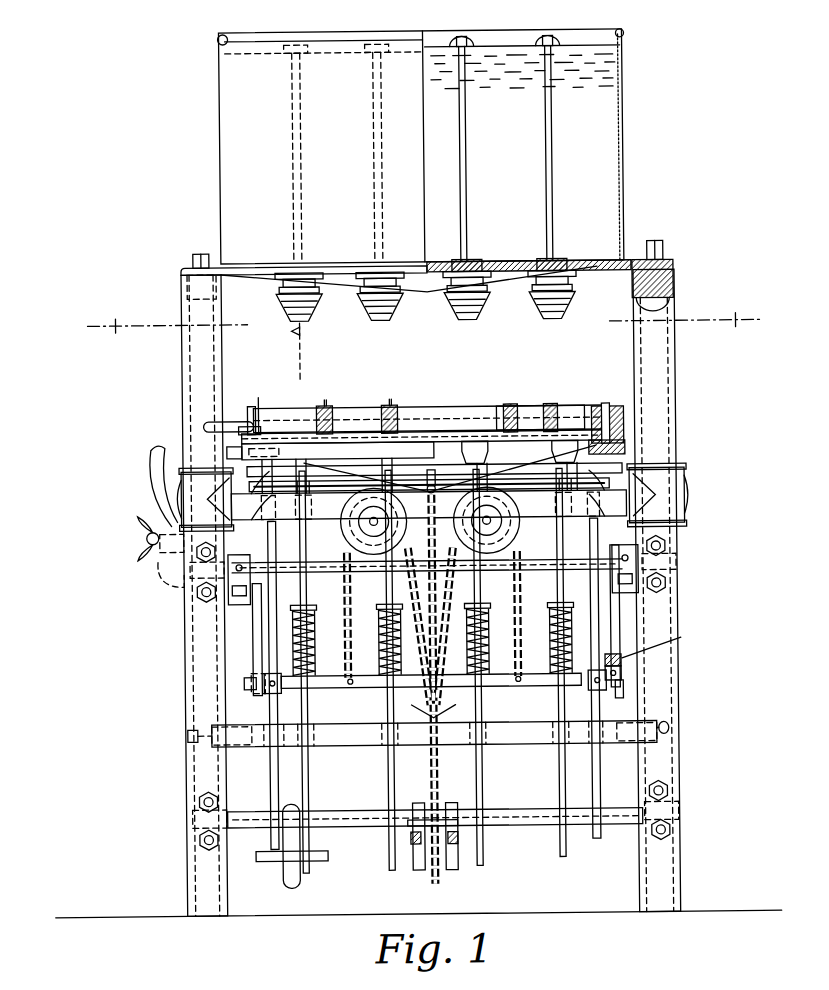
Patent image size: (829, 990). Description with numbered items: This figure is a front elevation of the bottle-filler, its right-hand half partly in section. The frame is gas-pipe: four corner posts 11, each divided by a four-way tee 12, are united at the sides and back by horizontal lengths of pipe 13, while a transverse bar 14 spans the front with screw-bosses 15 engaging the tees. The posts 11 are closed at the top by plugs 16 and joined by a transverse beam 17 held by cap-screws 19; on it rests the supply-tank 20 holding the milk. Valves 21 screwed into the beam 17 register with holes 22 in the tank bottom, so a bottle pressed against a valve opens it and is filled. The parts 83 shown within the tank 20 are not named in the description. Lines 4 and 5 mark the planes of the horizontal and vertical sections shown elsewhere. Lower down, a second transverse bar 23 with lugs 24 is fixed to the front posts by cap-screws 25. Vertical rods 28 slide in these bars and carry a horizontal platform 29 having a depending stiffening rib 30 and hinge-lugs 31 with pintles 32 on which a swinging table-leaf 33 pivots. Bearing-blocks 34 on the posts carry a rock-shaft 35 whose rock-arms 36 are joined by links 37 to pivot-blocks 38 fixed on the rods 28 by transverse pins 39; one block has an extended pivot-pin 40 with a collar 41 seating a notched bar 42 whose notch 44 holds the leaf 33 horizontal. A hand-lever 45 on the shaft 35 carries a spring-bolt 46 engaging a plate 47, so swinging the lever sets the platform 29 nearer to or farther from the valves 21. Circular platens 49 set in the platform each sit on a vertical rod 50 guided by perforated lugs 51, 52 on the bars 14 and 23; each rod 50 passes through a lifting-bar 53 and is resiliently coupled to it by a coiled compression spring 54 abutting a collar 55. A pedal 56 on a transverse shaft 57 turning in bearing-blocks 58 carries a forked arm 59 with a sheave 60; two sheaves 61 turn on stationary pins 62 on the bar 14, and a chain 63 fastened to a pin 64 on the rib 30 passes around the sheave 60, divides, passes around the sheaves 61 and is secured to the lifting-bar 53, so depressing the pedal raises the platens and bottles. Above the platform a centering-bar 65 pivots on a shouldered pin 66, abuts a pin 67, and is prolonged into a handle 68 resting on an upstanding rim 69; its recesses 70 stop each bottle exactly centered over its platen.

The section line 4 is at (423, 322).
The section line 5 is at (298, 352).
The corner posts 11 is at (190, 375).
The four-way tee 12 is at (186, 472).
The horizontal lengths of pipe 13 is at (563, 480).
The transverse bar 14 is at (533, 518).
The screw-bosses 15 is at (647, 500).
The plugs 16 is at (190, 290).
The transverse beam 17 is at (588, 269).
The cap-screws 19 is at (196, 256).
The supply-tank 20 is at (624, 156).
The valves 21 is at (366, 313).
The holes 22 is at (483, 262).
The second transverse bar 23 is at (512, 745).
The lugs 24 is at (220, 745).
The cap-screws 25 is at (186, 738).
The vertical rods 28 is at (268, 790).
The horizontal platform 29 is at (522, 407).
The stiffening rib 30 is at (434, 475).
The hinge-lugs 31 is at (243, 455).
The pintles 32 is at (230, 448).
The table-leaf 33 is at (428, 432).
The bearing-blocks 34 is at (196, 590).
The rock-shaft 35 is at (533, 572).
The rock-arms 36 is at (240, 553).
The links 37 is at (252, 632).
The pivot-blocks 38 is at (262, 692).
The transverse pins 39 is at (278, 675).
The pivot-pin 40 is at (620, 674).
The collar 41 is at (622, 690).
The notched bar 42 is at (620, 660).
The notch 44 is at (680, 640).
The hand-lever 45 is at (156, 468).
The spring-bolt 46 is at (147, 537).
The plate 47 is at (168, 552).
The circular platen 49 is at (548, 430).
The vertical rod 50 is at (306, 592).
The perforated lugs 51 is at (300, 518).
The perforated lugs 52 is at (312, 745).
The lifting-bar 53 is at (498, 687).
The coiled compression spring 54 is at (314, 648).
The collar 55 is at (298, 609).
The pedal 56 is at (270, 860).
The transverse shaft 57 is at (335, 812).
The bearing-blocks 58 is at (198, 840).
The forked arm 59 is at (427, 839).
The sheave 60 is at (446, 858).
The sheaves 61 is at (345, 520).
The stationary pins 62 is at (372, 519).
The chain 63 is at (430, 884).
The pin 64 is at (436, 482).
The centering-bar 65 is at (390, 407).
The shouldered pin 66 is at (625, 429).
The pin 67 is at (258, 416).
The handle 68 is at (212, 424).
The upstanding rim 69 is at (340, 405).
The recesses 70 is at (312, 410).
The tank rod 83 is at (378, 136).